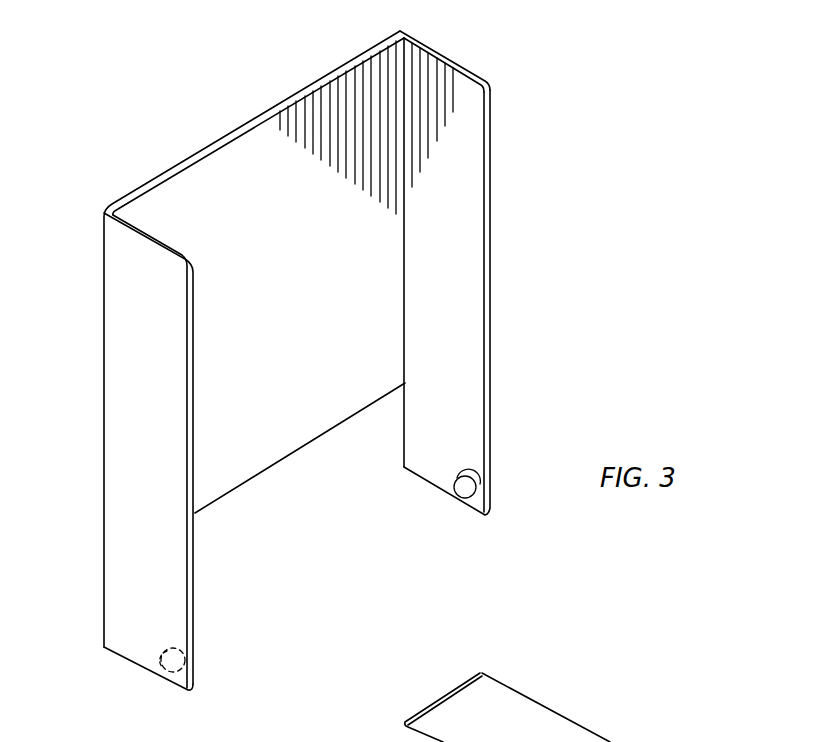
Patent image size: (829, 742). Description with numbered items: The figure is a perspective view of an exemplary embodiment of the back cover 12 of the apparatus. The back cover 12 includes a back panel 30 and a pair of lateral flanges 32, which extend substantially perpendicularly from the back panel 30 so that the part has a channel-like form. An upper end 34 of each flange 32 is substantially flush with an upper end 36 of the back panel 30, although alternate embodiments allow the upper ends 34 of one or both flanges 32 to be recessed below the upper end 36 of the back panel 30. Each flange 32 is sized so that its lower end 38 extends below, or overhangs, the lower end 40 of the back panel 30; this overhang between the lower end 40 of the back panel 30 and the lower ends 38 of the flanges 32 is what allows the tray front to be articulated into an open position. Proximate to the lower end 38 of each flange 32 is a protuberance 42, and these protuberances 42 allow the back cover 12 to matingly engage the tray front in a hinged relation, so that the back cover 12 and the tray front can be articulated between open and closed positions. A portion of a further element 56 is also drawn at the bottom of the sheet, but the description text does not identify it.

The back cover 12 is at (241, 111).
The back panel 30 is at (188, 212).
The lateral flange 32 is at (492, 165).
The upper end of flange 34 is at (138, 237).
The upper end of back panel 36 is at (320, 75).
The lower end of flange 38 is at (442, 492).
The lower end of back panel 40 is at (302, 448).
The protuberance 42 is at (463, 488).
The base plate 56 is at (647, 741).